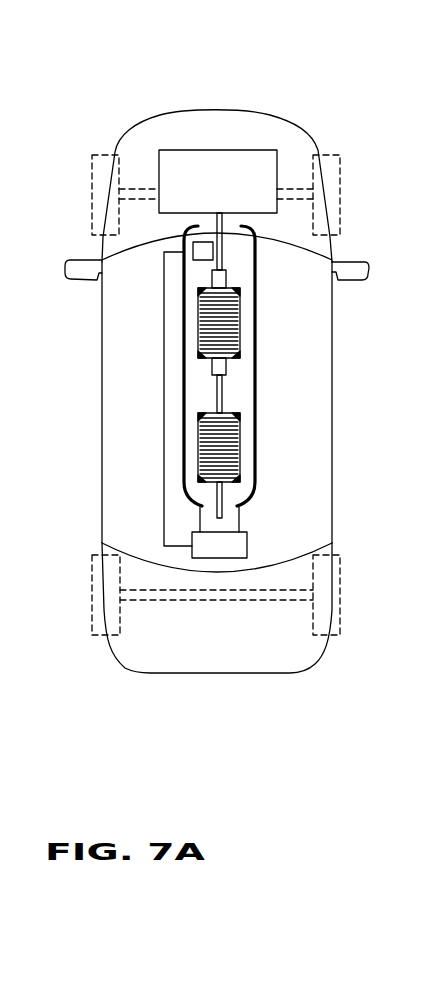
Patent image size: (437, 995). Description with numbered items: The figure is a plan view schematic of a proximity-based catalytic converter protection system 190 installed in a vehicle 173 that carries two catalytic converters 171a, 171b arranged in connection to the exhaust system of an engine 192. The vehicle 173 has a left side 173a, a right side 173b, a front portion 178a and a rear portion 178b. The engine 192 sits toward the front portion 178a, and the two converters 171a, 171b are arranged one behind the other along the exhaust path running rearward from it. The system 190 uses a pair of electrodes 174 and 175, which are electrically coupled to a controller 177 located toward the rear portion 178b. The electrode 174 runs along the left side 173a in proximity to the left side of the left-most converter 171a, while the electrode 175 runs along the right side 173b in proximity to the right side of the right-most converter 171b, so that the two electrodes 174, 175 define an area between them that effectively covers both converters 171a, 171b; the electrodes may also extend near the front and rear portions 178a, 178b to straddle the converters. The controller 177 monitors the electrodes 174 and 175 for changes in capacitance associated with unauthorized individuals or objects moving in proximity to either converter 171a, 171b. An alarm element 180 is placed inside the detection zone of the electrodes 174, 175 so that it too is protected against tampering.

The proximity-based catalytic converter protection system 190 is at (217, 392).
The engine 192 is at (196, 150).
The front portion of vehicle 178a is at (221, 102).
The rear portion of vehicle 178b is at (221, 677).
The vehicle 173 is at (327, 187).
The left side of vehicle 173a is at (99, 306).
The right side of vehicle 173b is at (338, 296).
The alarm element 180 is at (203, 251).
The catalytic converter 171a is at (243, 321).
The catalytic converter 171b is at (240, 474).
The electrode 174 is at (183, 402).
The electrode 175 is at (257, 428).
The controller 177 is at (214, 546).